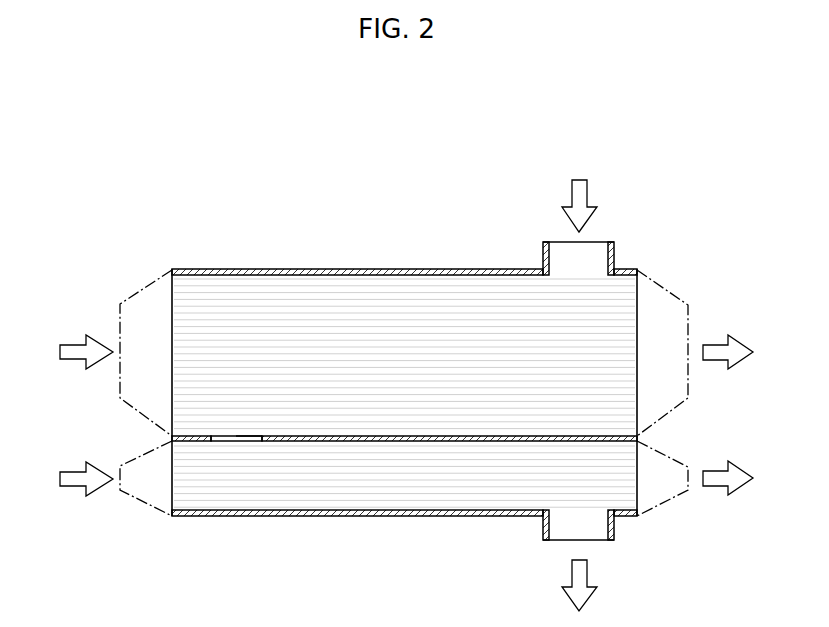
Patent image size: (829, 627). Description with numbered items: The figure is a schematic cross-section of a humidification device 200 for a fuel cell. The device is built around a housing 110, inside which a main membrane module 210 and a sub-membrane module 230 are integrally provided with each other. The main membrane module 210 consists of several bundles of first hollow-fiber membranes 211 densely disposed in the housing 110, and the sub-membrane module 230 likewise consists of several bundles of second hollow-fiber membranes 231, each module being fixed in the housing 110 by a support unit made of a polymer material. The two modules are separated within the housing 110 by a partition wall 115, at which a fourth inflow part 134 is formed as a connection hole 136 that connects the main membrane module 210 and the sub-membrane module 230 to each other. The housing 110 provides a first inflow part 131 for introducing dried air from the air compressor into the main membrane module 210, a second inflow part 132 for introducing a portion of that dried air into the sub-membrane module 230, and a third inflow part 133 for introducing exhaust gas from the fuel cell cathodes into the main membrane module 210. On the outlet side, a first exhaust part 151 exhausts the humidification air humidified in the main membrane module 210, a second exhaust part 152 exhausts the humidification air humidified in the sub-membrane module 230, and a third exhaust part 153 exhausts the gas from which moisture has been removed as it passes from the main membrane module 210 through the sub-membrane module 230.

The humidification device 200 is at (408, 144).
The housing 110 is at (395, 260).
The partition wall 115 is at (343, 441).
The first inflow part 131 is at (152, 285).
The second inflow part 132 is at (143, 509).
The third inflow part 133 is at (614, 244).
The fourth inflow part 134 is at (226, 443).
The connection hole 136 is at (245, 441).
The first exhaust part 151 is at (660, 290).
The second exhaust part 152 is at (668, 507).
The third exhaust part 153 is at (614, 537).
The main membrane module 210 is at (170, 374).
The first hollow-fiber membranes 211 is at (278, 295).
The sub-membrane module 230 is at (170, 466).
The second hollow-fiber membranes 231 is at (408, 492).